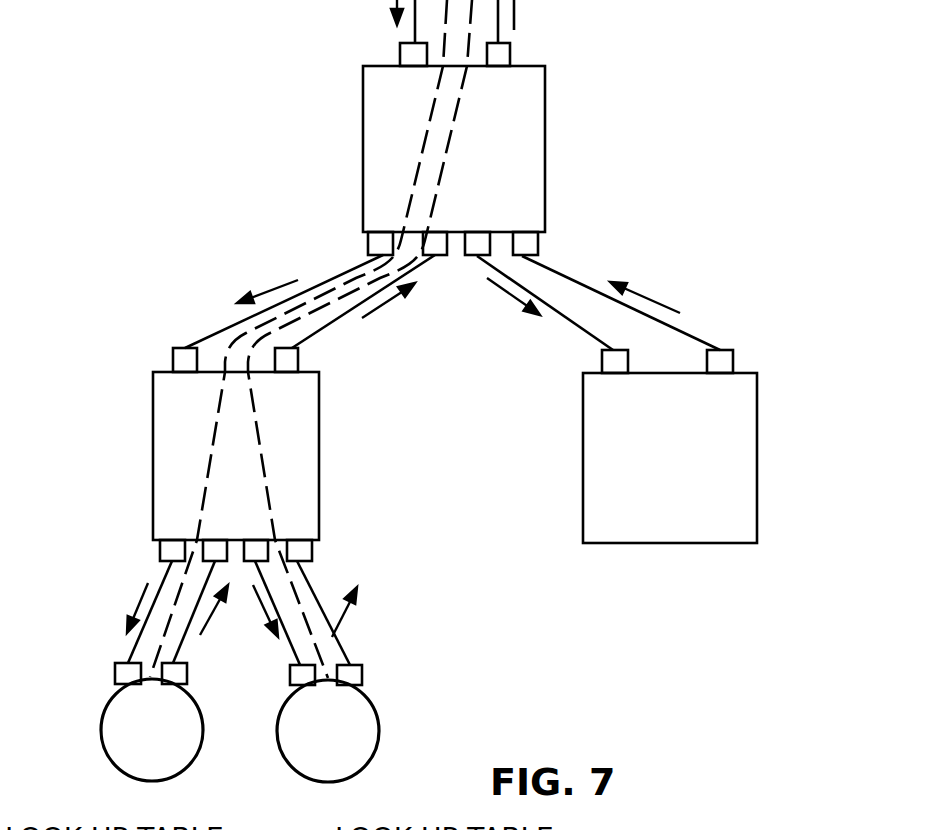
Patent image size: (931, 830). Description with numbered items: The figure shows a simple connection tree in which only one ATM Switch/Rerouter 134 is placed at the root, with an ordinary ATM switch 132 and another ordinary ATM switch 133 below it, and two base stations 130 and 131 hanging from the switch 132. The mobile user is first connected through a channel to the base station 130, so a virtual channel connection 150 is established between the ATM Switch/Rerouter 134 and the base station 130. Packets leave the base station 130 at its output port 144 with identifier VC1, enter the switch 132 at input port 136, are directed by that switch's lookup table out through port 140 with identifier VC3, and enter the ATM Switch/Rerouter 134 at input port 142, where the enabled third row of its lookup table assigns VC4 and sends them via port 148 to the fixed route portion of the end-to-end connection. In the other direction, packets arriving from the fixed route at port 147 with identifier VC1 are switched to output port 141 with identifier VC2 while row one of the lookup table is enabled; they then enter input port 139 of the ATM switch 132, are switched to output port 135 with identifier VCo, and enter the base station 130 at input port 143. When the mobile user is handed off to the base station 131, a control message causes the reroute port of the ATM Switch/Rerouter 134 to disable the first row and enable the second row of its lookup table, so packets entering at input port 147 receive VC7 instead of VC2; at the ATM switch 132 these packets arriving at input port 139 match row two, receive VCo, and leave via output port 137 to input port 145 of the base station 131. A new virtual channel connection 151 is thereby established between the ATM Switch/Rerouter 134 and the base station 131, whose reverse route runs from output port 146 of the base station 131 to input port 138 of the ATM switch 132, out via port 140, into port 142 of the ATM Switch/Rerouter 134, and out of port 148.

The base station 130 is at (122, 743).
The base station 131 is at (360, 744).
The ATM switch 132 is at (160, 475).
The ATM switch 133 is at (742, 463).
The ATM Switch/Rerouter 134 is at (528, 138).
The output port 135 is at (168, 550).
The input port 136 is at (233, 598).
The output port 137 is at (260, 548).
The input port 138 is at (313, 552).
The input port 139 is at (180, 355).
The port 140 is at (290, 362).
The output port 141 is at (375, 245).
The input port 142 is at (450, 282).
The input port 143 is at (125, 677).
The output port 144 is at (182, 675).
The input port 145 is at (300, 680).
The output port 146 is at (352, 679).
The input port 147 is at (408, 52).
The port 148 is at (500, 53).
The virtual channel connection 150 is at (213, 432).
The virtual channel connection 151 is at (262, 457).